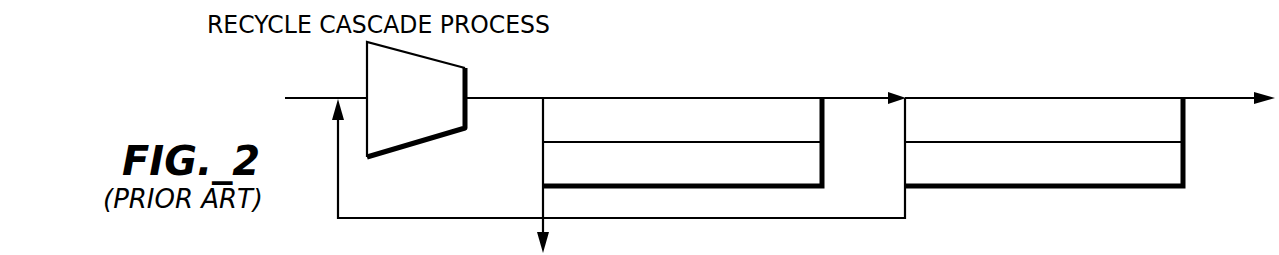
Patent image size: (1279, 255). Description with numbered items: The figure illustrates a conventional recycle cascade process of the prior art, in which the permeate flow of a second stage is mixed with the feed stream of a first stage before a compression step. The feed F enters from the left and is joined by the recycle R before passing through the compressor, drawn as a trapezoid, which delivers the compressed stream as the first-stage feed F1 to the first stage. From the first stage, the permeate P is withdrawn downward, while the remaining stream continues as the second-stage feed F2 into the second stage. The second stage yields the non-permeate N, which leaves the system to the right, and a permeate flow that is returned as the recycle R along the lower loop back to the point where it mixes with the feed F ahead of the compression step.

The feed F is at (326, 87).
The feed 1 F1 is at (504, 87).
The feed 2 F2 is at (864, 88).
The non-permeate N is at (1229, 88).
The permeate P is at (554, 176).
The recycle R is at (618, 174).